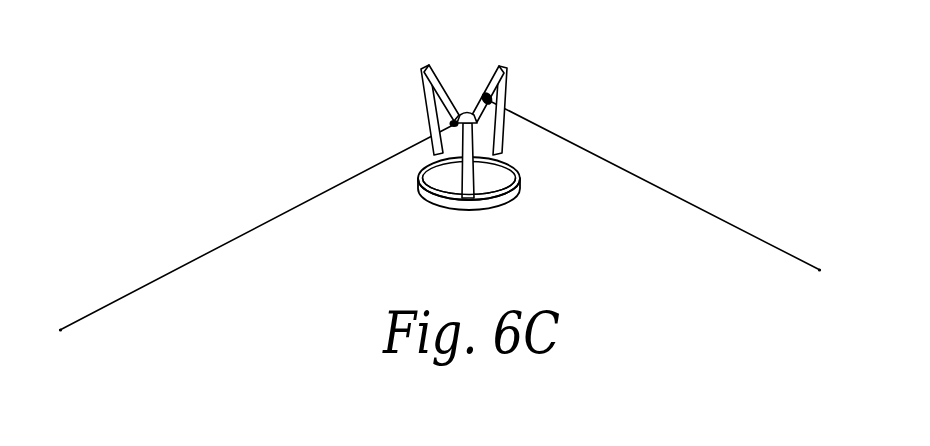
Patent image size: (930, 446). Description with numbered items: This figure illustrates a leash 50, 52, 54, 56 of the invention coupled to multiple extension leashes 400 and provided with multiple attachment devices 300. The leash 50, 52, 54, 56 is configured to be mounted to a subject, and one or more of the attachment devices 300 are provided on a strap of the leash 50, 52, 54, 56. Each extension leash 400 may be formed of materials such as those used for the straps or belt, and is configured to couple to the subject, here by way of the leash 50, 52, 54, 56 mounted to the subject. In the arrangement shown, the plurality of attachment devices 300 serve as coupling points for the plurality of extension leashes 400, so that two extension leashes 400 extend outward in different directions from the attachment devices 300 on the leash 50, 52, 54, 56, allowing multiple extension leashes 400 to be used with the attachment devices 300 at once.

The attachment device 300 is at (572, 110).
The extension leash 400 is at (239, 250).
The leash 50 is at (516, 45).
The leash 52 is at (441, 93).
The leash 54 is at (466, 114).
The leash 56 is at (500, 110).